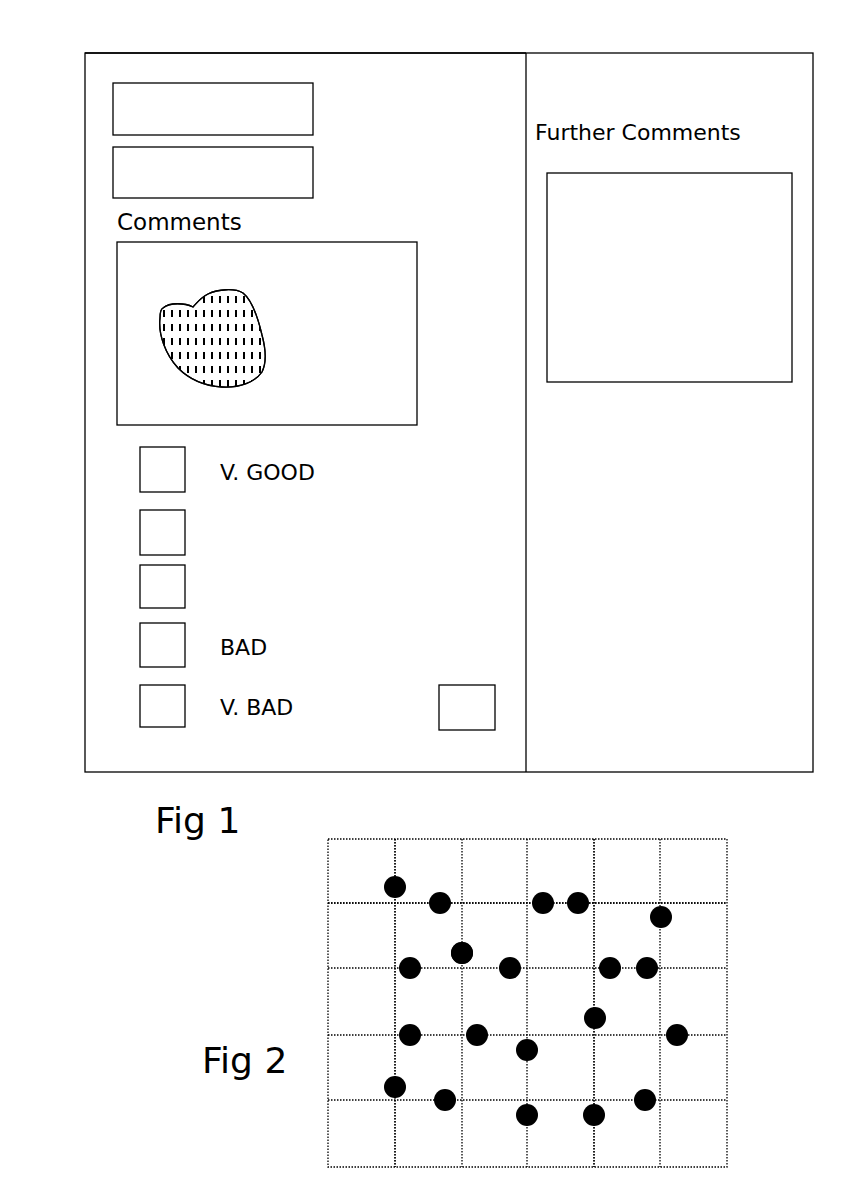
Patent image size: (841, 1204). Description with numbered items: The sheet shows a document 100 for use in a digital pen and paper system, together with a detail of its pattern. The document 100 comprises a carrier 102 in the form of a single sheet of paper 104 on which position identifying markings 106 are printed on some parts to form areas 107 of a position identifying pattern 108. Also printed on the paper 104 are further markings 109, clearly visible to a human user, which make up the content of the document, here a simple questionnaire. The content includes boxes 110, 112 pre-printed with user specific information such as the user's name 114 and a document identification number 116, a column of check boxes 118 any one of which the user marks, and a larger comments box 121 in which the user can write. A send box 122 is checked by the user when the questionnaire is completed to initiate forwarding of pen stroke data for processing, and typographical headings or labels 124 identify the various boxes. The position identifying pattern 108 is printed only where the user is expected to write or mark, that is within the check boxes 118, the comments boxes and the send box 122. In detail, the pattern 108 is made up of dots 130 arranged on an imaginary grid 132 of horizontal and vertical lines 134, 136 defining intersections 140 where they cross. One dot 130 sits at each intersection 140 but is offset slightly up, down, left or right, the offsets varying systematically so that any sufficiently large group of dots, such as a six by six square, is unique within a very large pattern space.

In FIG. 1, the document 100 is at (367, 77).
In FIG. 1, the carrier 102 is at (96, 121).
In FIG. 1, the sheet of paper 104 is at (103, 68).
In FIG. 1, the position identifying markings 106 is at (228, 332).
In FIG. 1, the areas 107 is at (263, 373).
In FIG. 1, the position identifying pattern 108 is at (185, 380).
In FIG. 2, the position identifying pattern 108 is at (672, 978).
In FIG. 1, the further markings 109 is at (140, 472).
In FIG. 1, the box 110 is at (313, 108).
In FIG. 1, the box 112 is at (313, 172).
In FIG. 1, the user's name 114 is at (117, 115).
In FIG. 1, the document identification number 116 is at (267, 180).
In FIG. 1, the check boxes 118 is at (140, 533).
In FIG. 1, the comments box 121 is at (672, 382).
In FIG. 1, the send box 122 is at (495, 707).
In FIG. 1, the headings or labels 124 is at (315, 532).
In FIG. 2, the dots 130 is at (672, 917).
In FIG. 2, the imaginary grid 132 is at (595, 875).
In FIG. 2, the horizontal lines 134 is at (358, 905).
In FIG. 2, the vertical lines 136 is at (395, 862).
In FIG. 2, the intersections 140 is at (463, 903).